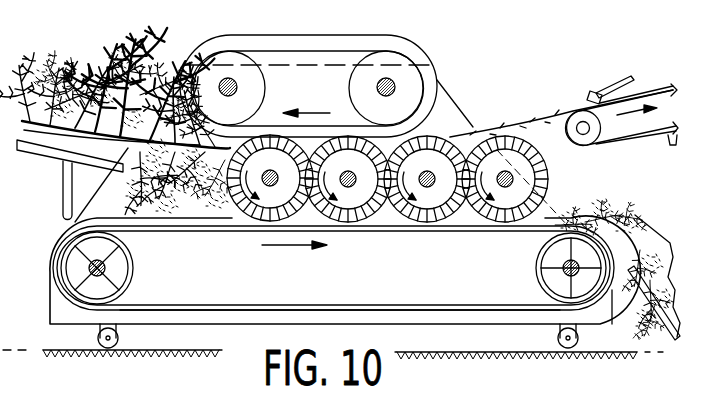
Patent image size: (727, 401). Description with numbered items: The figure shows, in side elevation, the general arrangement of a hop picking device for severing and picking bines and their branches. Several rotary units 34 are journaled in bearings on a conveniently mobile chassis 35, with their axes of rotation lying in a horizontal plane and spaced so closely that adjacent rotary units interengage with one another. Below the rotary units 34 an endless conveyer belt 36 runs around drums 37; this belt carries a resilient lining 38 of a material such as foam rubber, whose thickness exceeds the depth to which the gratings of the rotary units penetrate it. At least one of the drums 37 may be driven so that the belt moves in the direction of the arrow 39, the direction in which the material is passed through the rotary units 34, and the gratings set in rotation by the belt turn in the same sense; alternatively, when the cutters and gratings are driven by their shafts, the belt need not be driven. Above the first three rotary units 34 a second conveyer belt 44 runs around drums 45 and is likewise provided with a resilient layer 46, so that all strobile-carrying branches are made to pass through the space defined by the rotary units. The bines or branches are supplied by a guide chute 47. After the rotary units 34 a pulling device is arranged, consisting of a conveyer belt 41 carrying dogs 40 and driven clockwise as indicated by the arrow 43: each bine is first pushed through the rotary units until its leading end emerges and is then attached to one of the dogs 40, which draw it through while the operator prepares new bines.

The rotary units 34 is at (270, 148).
The mobile chassis 35 is at (108, 201).
The endless conveyer belt 36 is at (157, 230).
The drums 37 is at (129, 278).
The resilient lining 38 is at (192, 313).
The arrow 39 is at (261, 247).
The dogs 40 is at (593, 93).
The conveyer belt 41 is at (612, 142).
The arrow 43 is at (632, 113).
The second conveyer belt 44 is at (318, 52).
The drums 45 is at (258, 82).
The resilient layer 46 is at (299, 42).
The guide chute 47 is at (38, 152).